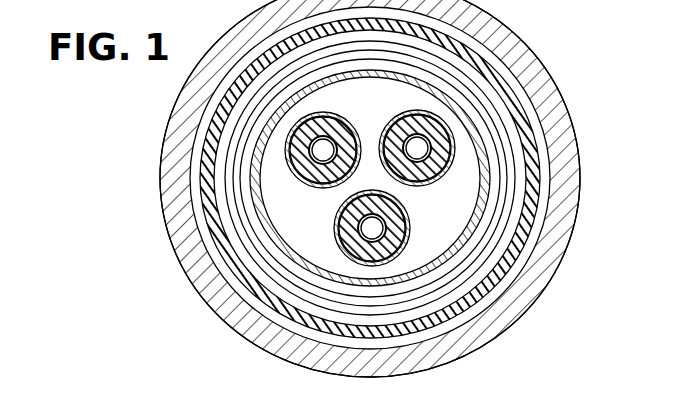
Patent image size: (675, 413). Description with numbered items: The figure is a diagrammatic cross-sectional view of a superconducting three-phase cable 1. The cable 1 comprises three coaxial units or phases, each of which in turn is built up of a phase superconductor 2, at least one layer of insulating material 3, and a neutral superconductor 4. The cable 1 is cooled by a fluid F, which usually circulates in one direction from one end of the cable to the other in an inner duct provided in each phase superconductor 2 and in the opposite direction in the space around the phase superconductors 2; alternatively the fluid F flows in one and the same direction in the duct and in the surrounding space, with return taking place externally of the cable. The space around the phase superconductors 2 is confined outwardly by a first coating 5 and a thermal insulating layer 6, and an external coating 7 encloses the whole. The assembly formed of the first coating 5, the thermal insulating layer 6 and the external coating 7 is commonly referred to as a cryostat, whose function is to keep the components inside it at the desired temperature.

The superconducting three-phase cable 1 is at (538, 328).
The phase superconductor 2 is at (398, 125).
The layer of insulating material 3 is at (300, 175).
The neutral superconductor 4 is at (322, 147).
The first coating 5 is at (477, 139).
The thermal insulating layer 6 is at (538, 190).
The external coating 7 is at (167, 171).
The fluid F is at (305, 141).